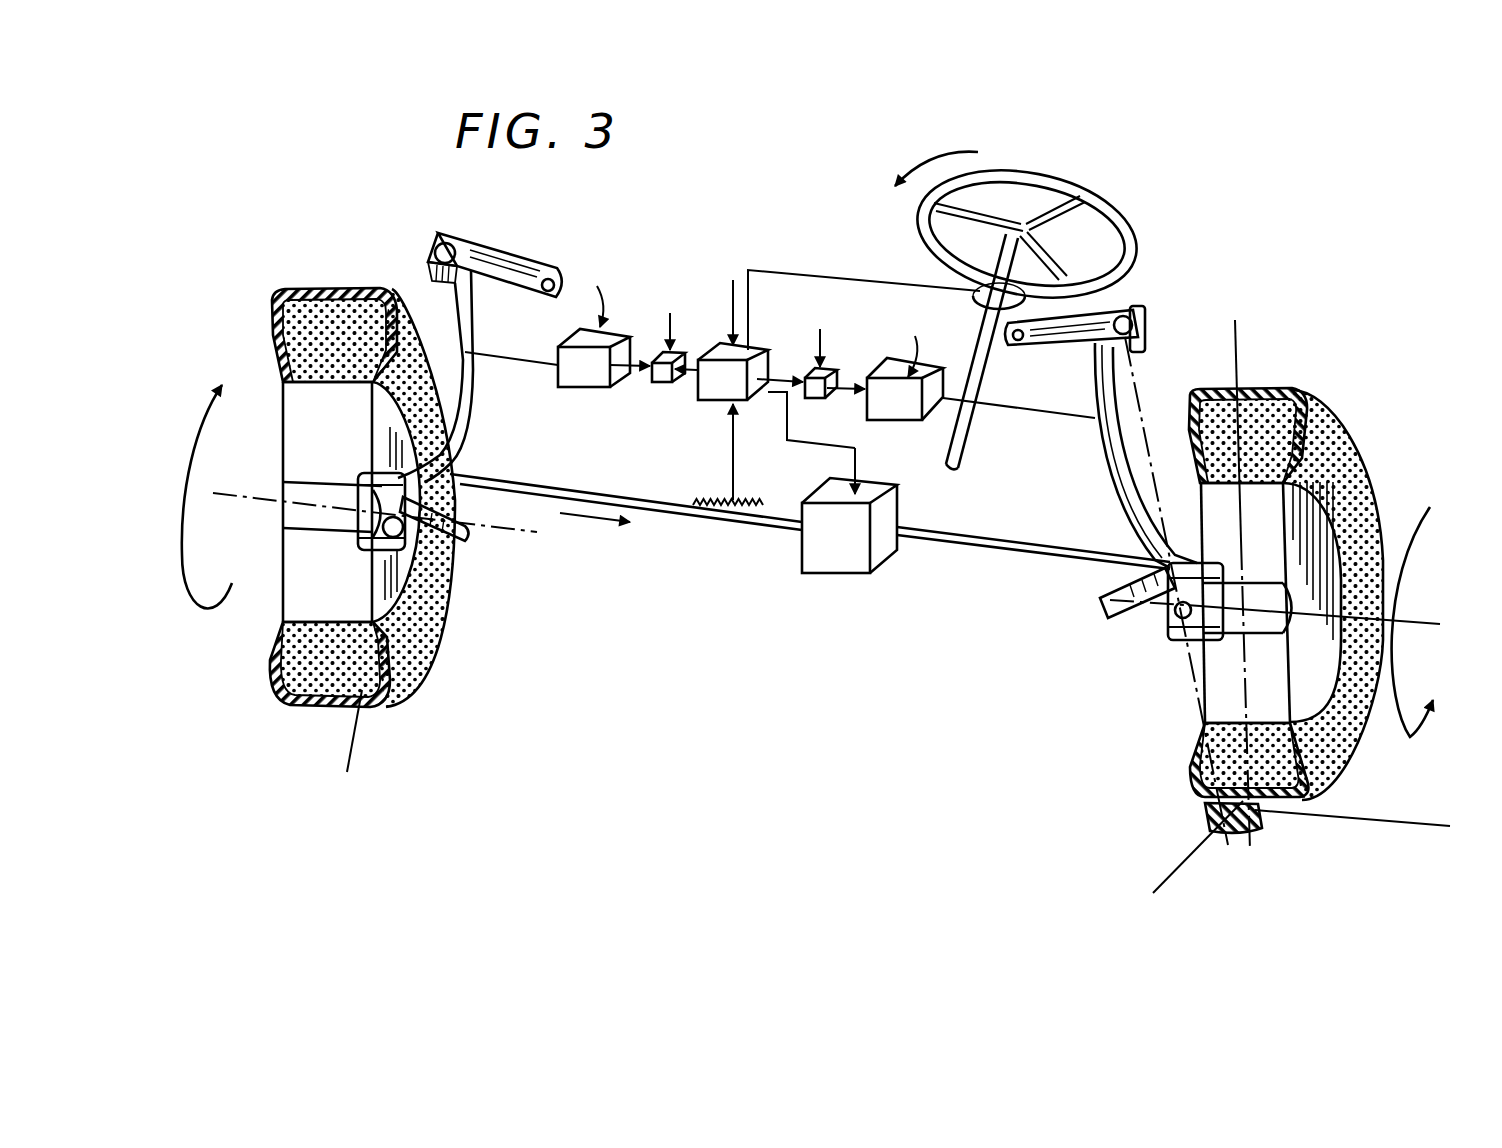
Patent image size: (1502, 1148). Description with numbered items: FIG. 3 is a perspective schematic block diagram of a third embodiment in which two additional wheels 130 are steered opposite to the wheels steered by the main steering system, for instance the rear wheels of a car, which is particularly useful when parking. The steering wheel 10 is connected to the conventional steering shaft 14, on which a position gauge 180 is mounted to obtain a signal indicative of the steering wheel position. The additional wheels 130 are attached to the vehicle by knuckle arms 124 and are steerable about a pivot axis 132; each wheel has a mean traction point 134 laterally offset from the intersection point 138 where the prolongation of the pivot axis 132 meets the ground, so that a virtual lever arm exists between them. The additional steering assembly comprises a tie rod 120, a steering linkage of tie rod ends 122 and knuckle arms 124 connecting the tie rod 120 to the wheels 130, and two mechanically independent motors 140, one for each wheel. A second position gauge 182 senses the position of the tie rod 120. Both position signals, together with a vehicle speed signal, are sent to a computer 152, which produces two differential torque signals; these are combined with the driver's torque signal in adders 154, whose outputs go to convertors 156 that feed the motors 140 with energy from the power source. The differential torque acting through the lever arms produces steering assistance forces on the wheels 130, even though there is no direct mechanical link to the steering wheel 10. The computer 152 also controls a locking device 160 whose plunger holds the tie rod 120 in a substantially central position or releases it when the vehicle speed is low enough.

The steering wheel 10 is at (1136, 262).
The steering shaft 14 is at (962, 457).
The tie rod 120 is at (560, 482).
The tie rod ends 122 is at (470, 468).
The knuckle arms 124 is at (473, 342).
The wheels 130 is at (343, 272).
The pivot axis 132 is at (364, 735).
The mean traction point 134 is at (1268, 820).
The intersection point 138 is at (1208, 812).
The motors 140 is at (283, 583).
The computer 152 is at (713, 393).
The adders 154 is at (653, 382).
The convertors 156 is at (570, 378).
The locking device 160 is at (880, 565).
The position gauge 180 is at (983, 288).
The position gauge 182 is at (708, 516).